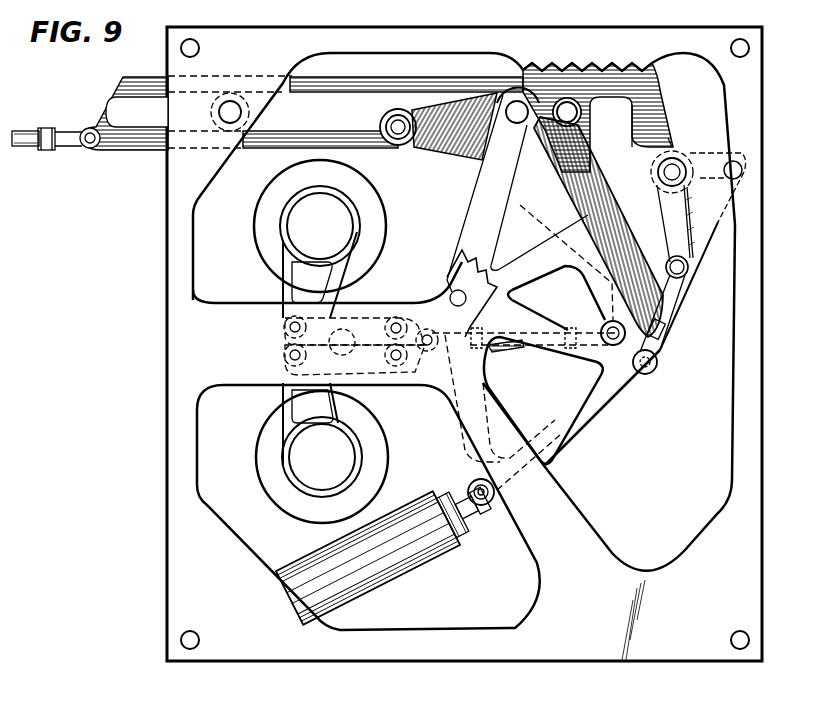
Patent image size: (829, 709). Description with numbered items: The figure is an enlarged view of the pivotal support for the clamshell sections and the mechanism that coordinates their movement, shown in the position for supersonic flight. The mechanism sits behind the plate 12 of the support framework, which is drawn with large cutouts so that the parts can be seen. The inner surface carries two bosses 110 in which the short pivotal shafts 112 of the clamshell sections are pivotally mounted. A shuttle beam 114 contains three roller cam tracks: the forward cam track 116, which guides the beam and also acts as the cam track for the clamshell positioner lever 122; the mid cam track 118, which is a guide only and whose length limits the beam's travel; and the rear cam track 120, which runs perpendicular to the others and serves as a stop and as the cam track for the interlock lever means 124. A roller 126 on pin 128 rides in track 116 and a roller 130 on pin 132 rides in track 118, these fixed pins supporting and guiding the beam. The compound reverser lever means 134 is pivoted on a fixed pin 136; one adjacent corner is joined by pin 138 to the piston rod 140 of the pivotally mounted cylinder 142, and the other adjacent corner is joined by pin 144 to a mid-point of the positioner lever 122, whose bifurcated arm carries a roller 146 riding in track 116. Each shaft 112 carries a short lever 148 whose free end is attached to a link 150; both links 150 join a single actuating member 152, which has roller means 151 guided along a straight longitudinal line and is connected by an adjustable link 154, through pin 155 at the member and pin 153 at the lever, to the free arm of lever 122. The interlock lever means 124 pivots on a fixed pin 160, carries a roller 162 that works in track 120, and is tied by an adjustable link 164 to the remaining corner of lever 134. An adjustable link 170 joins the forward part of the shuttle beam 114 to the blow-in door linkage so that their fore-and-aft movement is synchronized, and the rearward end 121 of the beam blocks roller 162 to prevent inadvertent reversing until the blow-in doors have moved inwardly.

The plate 12 is at (568, 647).
The boss 110 is at (373, 200).
The short pivotal shaft 112 is at (333, 235).
The shuttle beam 114 is at (133, 150).
The forward cam track 116 is at (307, 92).
The mid cam track 118 is at (465, 95).
The rear cam track 120 is at (625, 108).
The rearward end of shuttle beam 121 is at (668, 137).
The clamshell positioner lever 122 is at (600, 218).
The interlock lever means 124 is at (706, 219).
The roller 126 is at (265, 110).
The pin 128 is at (231, 110).
The roller 130 is at (578, 120).
The pin 132 is at (563, 103).
The compound reverser lever means 134 is at (603, 405).
The pin 136 is at (457, 290).
The pin 138 is at (486, 505).
The piston rod 140 is at (458, 492).
The cylinder 142 is at (378, 560).
The pin 144 is at (515, 100).
The roller 146 is at (378, 118).
The short lever 148 is at (283, 288).
The link 150 is at (346, 307).
The roller means 151 is at (320, 362).
The actuating member 152 is at (417, 357).
The pin 153 is at (606, 326).
The adjustable link 154 is at (503, 343).
The pin 155 is at (447, 280).
The pin 160 is at (740, 170).
The roller 162 is at (658, 176).
The adjustable link 164 is at (667, 298).
The adjustable link 170 is at (38, 128).